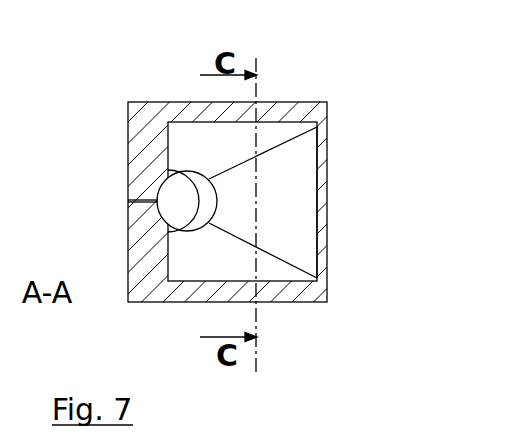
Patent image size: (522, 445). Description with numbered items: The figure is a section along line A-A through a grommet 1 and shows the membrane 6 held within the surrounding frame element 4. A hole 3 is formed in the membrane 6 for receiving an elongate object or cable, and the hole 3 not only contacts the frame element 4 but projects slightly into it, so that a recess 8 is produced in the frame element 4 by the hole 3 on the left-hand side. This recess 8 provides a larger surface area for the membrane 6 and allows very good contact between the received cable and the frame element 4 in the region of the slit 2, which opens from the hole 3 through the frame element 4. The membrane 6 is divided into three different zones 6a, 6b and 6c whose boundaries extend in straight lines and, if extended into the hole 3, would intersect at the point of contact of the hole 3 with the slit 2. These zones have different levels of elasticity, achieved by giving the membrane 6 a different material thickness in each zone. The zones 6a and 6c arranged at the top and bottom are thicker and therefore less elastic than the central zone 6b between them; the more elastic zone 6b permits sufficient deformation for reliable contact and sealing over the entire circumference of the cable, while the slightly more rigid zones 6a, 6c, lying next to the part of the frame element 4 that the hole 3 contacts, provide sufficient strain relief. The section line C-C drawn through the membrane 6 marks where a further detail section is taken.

The grommet 1 is at (106, 90).
The slit 2 is at (143, 200).
The hole 3 is at (179, 192).
The frame element 4 is at (143, 278).
The membrane 6 is at (297, 169).
The upper zone of the membrane 6a is at (203, 138).
The central zone of the membrane 6b is at (290, 233).
The lower zone of the membrane 6c is at (213, 258).
The recess 8 is at (162, 215).